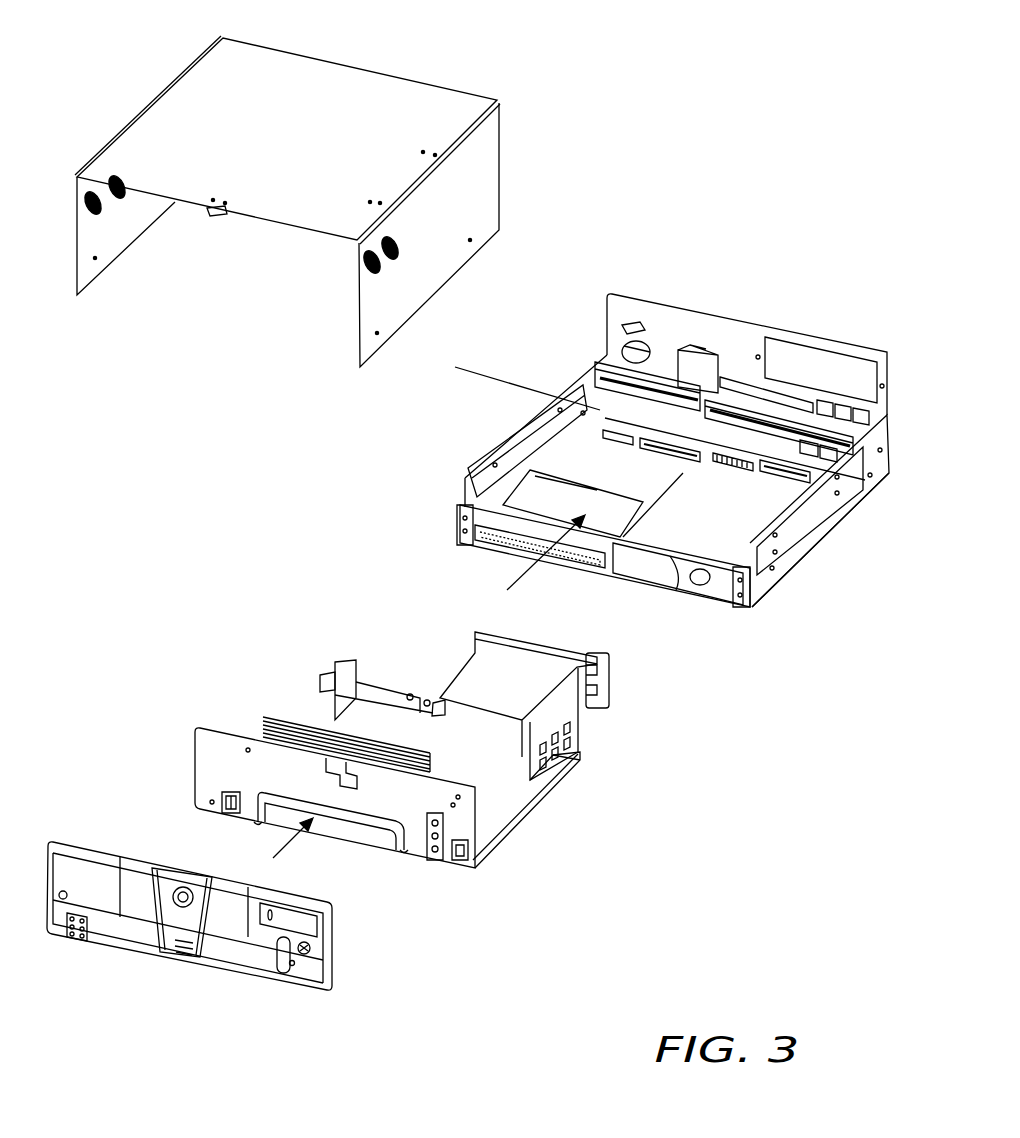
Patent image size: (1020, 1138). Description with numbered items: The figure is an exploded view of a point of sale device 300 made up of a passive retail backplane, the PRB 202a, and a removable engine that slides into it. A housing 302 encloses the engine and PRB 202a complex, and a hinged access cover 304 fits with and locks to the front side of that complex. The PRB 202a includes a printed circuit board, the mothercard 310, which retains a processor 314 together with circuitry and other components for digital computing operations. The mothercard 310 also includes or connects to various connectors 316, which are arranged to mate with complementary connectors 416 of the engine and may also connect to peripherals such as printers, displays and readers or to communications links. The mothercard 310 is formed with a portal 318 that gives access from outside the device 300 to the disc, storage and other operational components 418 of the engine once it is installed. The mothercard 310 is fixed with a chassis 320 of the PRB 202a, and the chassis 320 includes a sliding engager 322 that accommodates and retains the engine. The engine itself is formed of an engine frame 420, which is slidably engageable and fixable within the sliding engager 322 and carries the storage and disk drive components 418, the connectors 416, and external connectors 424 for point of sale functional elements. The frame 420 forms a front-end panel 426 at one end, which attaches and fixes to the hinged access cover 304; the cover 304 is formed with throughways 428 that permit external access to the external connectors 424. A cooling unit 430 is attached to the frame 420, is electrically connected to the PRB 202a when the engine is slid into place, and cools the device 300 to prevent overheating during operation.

The device 300 is at (707, 195).
The housing 302 is at (313, 77).
The hinged access cover 304 is at (88, 850).
The mothercard 310 is at (633, 295).
The processor 314 is at (647, 355).
The connectors 316 is at (693, 455).
The portal 318 is at (833, 353).
The chassis 320 is at (823, 523).
The sliding engager 322 is at (507, 462).
The passive retail backplane 202a is at (780, 577).
The connectors 416 is at (427, 700).
The storage, disk drive and similar components 418 is at (527, 767).
The engine frame 420 is at (498, 818).
The external connectors 424 is at (217, 810).
The front-end panel 426 is at (202, 763).
The throughways 428 is at (83, 940).
The cooling unit 430 is at (277, 723).